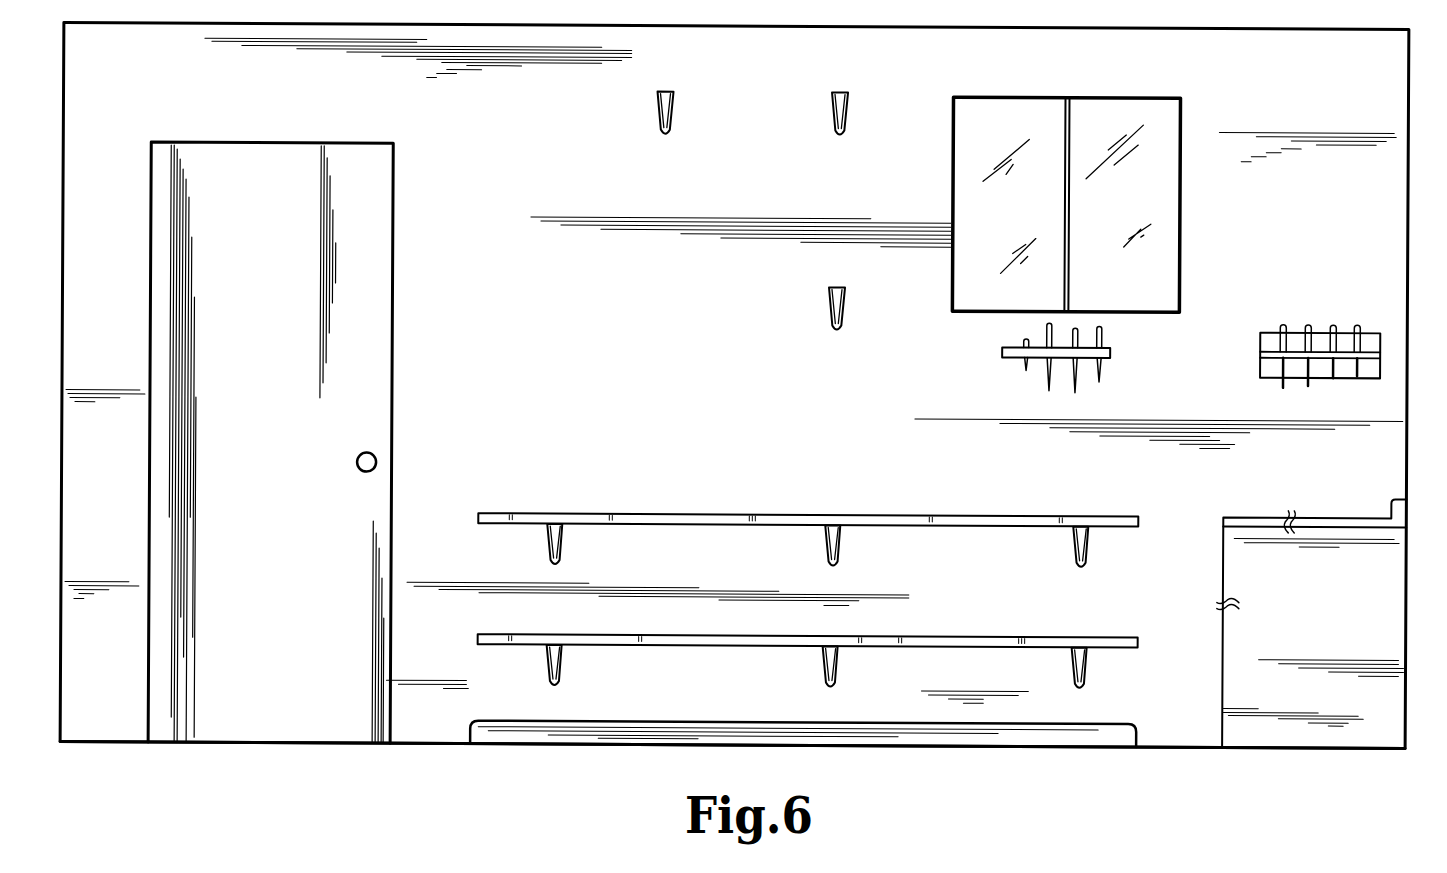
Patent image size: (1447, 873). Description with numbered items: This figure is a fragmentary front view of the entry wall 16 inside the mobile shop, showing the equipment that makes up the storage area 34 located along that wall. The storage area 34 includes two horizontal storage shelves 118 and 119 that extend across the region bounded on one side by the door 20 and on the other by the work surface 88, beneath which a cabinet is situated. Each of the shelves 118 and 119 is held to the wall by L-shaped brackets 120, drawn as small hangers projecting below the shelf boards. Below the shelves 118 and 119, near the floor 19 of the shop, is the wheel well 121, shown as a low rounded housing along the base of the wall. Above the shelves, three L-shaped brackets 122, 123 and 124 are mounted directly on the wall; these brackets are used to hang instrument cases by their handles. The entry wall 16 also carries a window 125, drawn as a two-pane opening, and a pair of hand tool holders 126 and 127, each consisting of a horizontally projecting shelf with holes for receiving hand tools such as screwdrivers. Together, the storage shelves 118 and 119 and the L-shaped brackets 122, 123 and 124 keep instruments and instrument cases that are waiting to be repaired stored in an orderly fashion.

The entry wall 16 is at (1374, 100).
The floor 19 is at (447, 737).
The door 20 is at (380, 217).
The storage area 34 is at (1327, 24).
The work surface 88 is at (1311, 617).
The horizontal storage shelf 118 is at (892, 513).
The horizontal storage shelf 119 is at (892, 634).
The L-shaped bracket 120 is at (1100, 690).
The wheel well 121 is at (1139, 723).
The L-shaped bracket 122 is at (672, 98).
The L-shaped bracket 123 is at (846, 98).
The L-shaped bracket 124 is at (845, 305).
The window 125 is at (1098, 117).
The hand tool holder 126 is at (1111, 352).
The hand tool holder 127 is at (1373, 342).